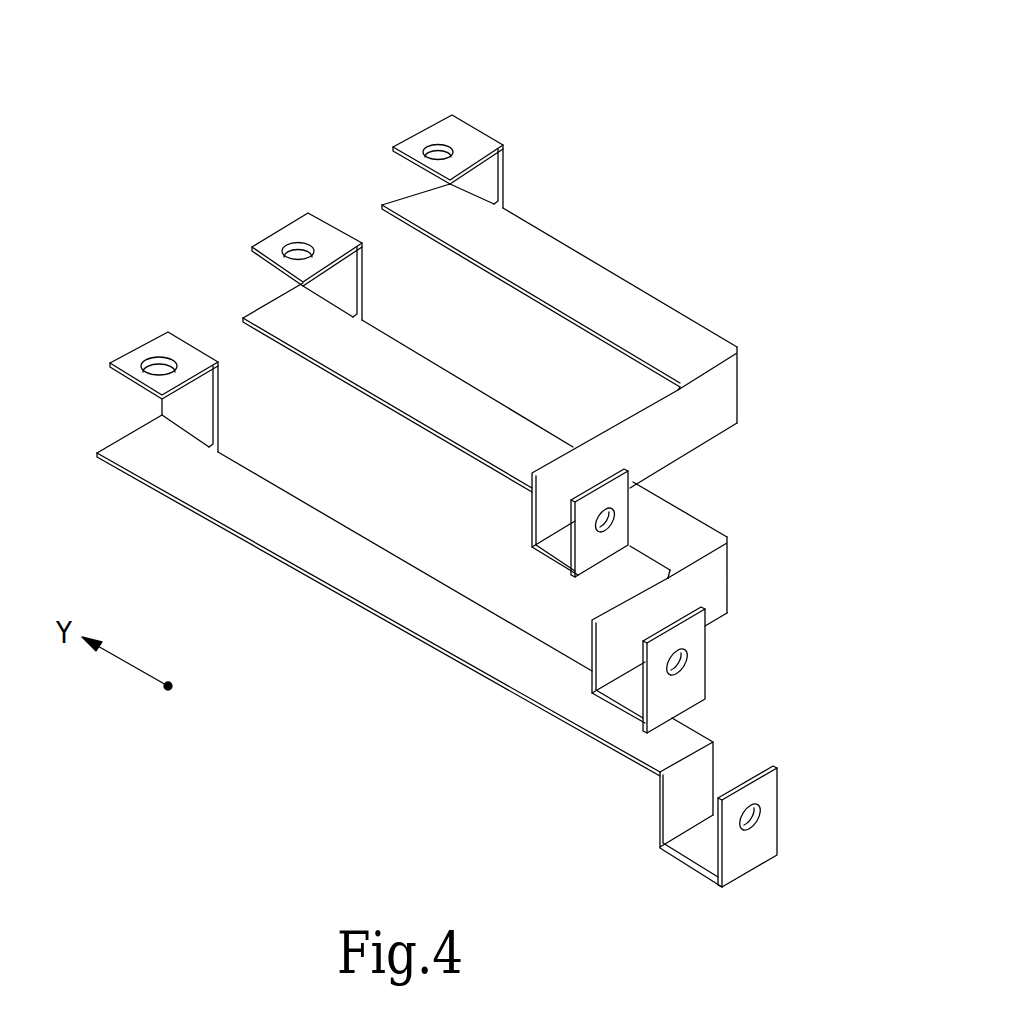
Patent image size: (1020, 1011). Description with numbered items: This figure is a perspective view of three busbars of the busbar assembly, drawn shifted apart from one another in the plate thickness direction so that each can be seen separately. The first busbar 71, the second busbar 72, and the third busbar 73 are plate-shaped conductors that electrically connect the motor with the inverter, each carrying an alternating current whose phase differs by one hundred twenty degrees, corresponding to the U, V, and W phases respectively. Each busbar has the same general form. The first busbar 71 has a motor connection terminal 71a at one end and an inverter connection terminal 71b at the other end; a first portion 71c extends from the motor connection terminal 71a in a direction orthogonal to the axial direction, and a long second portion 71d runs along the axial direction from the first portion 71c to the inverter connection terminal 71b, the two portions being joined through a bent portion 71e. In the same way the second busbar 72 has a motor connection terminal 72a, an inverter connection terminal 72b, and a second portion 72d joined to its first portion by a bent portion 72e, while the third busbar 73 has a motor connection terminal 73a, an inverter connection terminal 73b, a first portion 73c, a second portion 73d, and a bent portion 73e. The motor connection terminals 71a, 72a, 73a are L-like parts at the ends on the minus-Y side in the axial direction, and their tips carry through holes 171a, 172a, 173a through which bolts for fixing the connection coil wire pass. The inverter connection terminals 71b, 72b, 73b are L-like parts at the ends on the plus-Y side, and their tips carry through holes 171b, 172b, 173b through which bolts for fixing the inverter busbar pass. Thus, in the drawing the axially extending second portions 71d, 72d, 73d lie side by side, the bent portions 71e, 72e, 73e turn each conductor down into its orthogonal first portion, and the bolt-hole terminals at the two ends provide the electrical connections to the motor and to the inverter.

The first busbar 71 is at (477, 568).
The motor connection terminal 71a is at (804, 835).
The inverter connection terminal 71b is at (153, 337).
The first portion 71c is at (667, 805).
The second portion 71d is at (387, 597).
The bent portion 71e is at (717, 735).
The through hole 171a is at (762, 818).
The through hole 171b is at (147, 362).
The second busbar 72 is at (530, 420).
The motor connection terminal 72a is at (731, 670).
The inverter connection terminal 72b is at (294, 223).
The second portion 72d is at (425, 396).
The bent portion 72e is at (733, 530).
The through hole 172a is at (690, 658).
The through hole 172b is at (291, 247).
The third busbar 73 is at (598, 295).
The motor connection terminal 73a is at (542, 471).
The inverter connection terminal 73b is at (441, 122).
The first portion 73c is at (682, 438).
The second portion 73d is at (585, 276).
The bent portion 73e is at (740, 335).
The through hole 173a is at (598, 516).
The through hole 173b is at (433, 145).